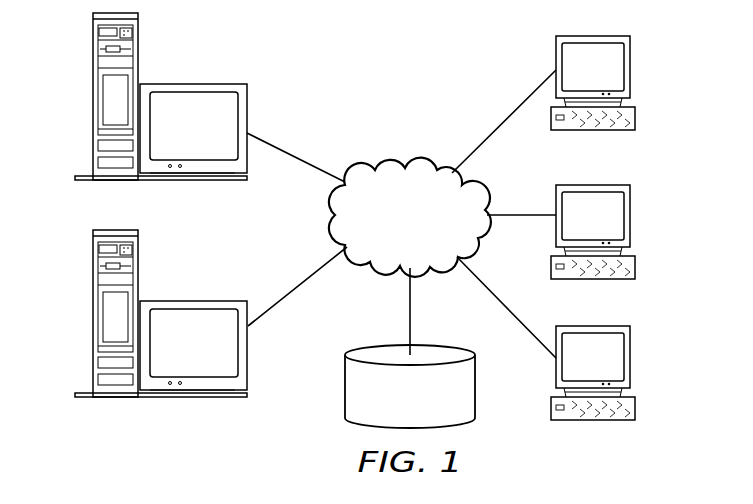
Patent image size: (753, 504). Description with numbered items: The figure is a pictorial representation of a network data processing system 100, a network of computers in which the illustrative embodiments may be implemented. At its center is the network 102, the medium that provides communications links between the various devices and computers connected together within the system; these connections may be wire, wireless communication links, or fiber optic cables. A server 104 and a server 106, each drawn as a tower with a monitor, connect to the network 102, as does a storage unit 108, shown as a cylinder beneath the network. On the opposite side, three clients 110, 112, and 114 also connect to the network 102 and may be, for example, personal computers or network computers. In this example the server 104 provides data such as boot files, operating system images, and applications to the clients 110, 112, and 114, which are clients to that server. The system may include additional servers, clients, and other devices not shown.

The network data processing system 100 is at (464, 54).
The network 102 is at (383, 162).
The server 104 is at (93, 100).
The server 106 is at (93, 315).
The storage unit 108 is at (345, 400).
The client 110 is at (631, 68).
The client 112 is at (631, 215).
The client 114 is at (631, 358).